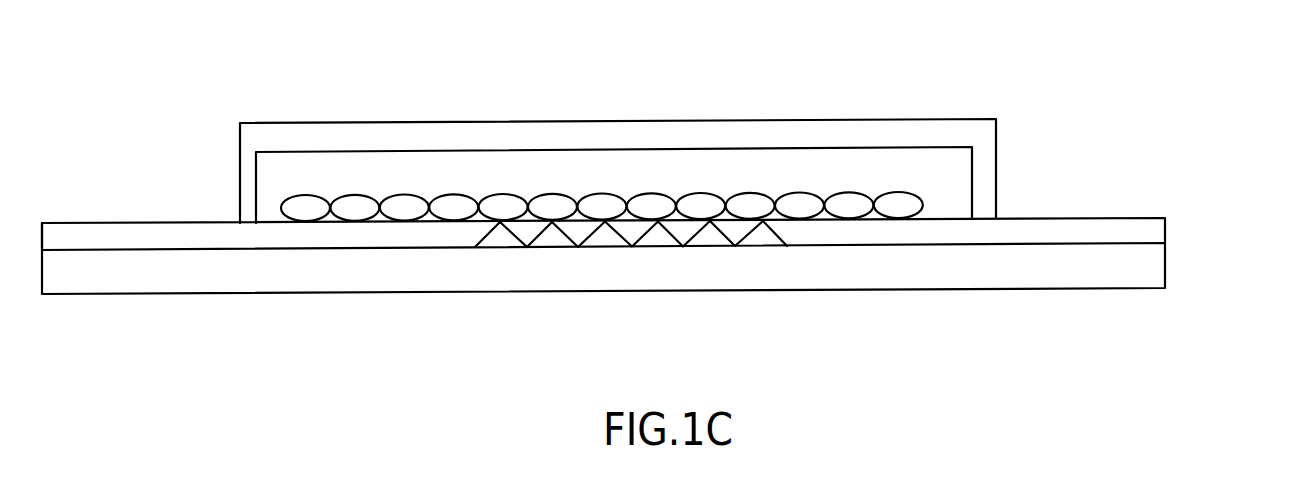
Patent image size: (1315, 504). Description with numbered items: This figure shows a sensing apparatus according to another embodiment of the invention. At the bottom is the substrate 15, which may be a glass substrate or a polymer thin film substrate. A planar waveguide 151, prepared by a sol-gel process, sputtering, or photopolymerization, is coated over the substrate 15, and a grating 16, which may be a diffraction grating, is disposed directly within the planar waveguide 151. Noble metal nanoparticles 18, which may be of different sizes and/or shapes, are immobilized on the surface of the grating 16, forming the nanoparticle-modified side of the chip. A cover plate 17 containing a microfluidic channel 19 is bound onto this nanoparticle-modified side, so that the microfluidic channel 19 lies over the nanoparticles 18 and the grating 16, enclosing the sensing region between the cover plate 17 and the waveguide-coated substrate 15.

The substrate 15 is at (1027, 288).
The planar waveguide 151 is at (1147, 218).
The grating 16 is at (633, 246).
The cover plate 17 is at (425, 122).
The noble metal nanoparticles 18 is at (853, 190).
The microfluidic channel 19 is at (733, 163).